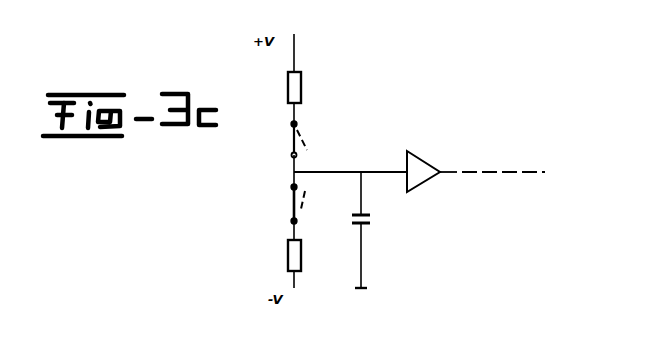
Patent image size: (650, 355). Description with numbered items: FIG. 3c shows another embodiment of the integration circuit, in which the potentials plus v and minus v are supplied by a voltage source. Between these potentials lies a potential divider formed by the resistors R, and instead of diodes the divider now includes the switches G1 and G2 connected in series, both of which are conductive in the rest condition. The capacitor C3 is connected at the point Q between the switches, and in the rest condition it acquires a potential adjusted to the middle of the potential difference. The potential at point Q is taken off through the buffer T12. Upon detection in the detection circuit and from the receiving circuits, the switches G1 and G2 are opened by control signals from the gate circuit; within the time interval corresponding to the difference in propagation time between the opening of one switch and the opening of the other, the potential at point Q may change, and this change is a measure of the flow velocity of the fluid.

The resistor R is at (283, 161).
The switch G1 is at (310, 139).
The switch G2 is at (310, 189).
The point Q is at (350, 160).
The capacitor C3 is at (372, 230).
The unity-gain buffer T12 is at (476, 176).